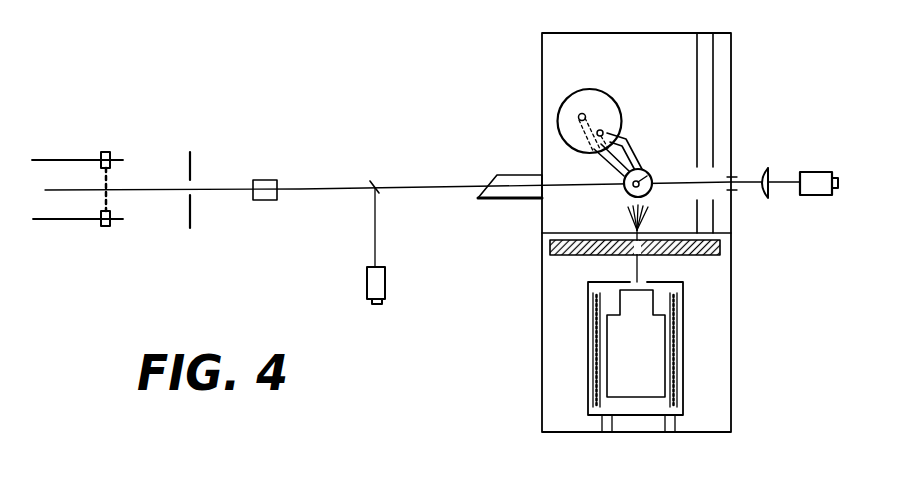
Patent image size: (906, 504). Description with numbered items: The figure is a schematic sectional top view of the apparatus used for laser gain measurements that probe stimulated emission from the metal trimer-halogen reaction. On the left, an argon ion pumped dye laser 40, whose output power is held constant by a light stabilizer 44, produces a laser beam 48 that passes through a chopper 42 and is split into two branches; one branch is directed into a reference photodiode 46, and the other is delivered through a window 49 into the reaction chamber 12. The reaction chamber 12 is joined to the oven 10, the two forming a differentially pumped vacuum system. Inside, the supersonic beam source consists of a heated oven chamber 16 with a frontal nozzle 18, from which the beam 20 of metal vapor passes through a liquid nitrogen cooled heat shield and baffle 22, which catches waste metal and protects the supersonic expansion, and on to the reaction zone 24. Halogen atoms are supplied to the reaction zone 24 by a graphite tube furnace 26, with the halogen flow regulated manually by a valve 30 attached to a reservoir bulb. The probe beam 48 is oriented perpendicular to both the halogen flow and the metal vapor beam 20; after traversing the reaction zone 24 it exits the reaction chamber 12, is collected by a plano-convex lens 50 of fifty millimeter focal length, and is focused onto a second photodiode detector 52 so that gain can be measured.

The oven 10 is at (733, 362).
The reaction chamber 12 is at (665, 45).
The oven chamber 16 is at (617, 349).
The frontal nozzle 18 is at (628, 286).
The beam of metal vapor 20 is at (625, 216).
The liquid nitrogen cooled heat shield and baffle 22 is at (548, 250).
The reaction zone 24 is at (656, 200).
The graphite tube furnace 26 is at (643, 162).
The valve 30 is at (652, 176).
The dye laser 40 is at (80, 221).
The chopper 42 is at (190, 150).
The light stabilizer 44 is at (258, 201).
The reference photodiode 46 is at (367, 283).
The laser beam 48 is at (150, 192).
The window 49 is at (513, 175).
The plano-convex lens 50 is at (771, 176).
The second photodiode detector 52 is at (822, 172).